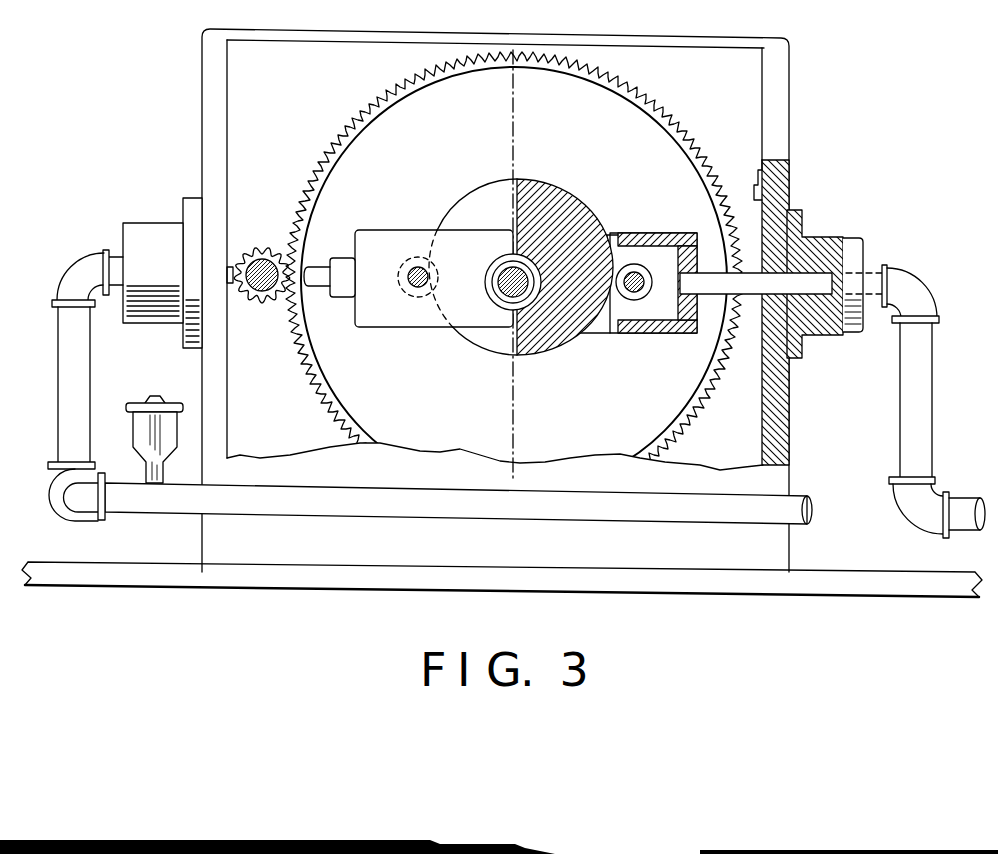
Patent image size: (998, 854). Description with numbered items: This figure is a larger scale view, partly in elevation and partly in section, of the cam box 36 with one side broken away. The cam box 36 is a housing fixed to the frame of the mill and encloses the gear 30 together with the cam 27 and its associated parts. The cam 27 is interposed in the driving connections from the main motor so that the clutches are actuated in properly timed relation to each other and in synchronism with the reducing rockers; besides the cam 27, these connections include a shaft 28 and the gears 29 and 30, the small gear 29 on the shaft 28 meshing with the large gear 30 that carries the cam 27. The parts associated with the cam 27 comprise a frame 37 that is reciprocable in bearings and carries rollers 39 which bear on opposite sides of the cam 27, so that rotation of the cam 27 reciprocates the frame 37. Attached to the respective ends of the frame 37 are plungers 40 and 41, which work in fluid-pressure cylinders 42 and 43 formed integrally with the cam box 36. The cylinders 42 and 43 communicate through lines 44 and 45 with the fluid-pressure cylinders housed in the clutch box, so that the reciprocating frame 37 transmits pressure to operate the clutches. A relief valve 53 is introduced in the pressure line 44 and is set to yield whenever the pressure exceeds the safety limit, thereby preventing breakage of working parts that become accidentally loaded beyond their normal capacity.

The cam box 36 is at (792, 60).
The gear 30 is at (343, 122).
The cam 27 is at (521, 267).
The gear 29 is at (262, 248).
The shaft 28 is at (266, 292).
The rollers 39 is at (412, 262).
The plunger 40 is at (315, 290).
The frame 37 is at (632, 333).
The plunger 41 is at (808, 290).
The fluid-pressure cylinder 43 is at (825, 237).
The fluid-pressure cylinder 42 is at (158, 222).
The line 44 is at (89, 373).
The line 45 is at (900, 405).
The relief valve 53 is at (134, 438).